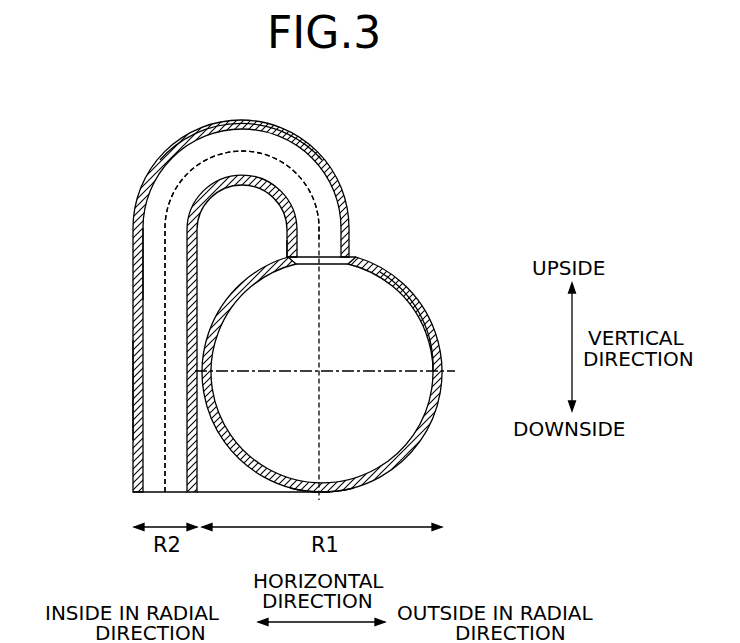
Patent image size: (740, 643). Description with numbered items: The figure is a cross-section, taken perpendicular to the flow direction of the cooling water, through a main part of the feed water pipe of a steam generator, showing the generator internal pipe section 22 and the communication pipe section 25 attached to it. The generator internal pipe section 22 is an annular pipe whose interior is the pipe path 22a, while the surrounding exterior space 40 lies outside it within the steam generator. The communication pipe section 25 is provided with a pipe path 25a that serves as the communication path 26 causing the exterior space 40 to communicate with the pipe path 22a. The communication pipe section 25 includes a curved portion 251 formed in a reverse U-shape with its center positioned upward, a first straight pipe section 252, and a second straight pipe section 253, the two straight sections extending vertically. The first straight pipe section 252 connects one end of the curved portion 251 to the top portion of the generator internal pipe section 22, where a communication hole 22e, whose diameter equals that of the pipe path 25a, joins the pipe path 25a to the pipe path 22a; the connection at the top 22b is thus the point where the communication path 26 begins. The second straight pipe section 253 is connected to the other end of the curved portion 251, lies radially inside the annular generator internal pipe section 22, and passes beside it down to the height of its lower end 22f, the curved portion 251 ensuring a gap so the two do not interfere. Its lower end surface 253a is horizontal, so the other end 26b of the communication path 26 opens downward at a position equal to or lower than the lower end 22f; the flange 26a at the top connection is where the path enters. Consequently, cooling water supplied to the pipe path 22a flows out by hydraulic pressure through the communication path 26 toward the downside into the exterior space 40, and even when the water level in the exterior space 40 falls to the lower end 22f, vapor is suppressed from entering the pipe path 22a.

The exterior space 40 is at (27, 339).
The communication pipe section 25 is at (129, 211).
The pipe path 25a is at (140, 243).
The curved portion 251 is at (271, 123).
The first straight pipe section 252 is at (350, 225).
The second straight pipe section 253 is at (133, 373).
The lower end surface 253a is at (137, 493).
The communication path 26 is at (150, 283).
The groove bottom (flange) 26a is at (362, 258).
The other end of the communication path 26b is at (166, 493).
The generator internal pipe section 22 is at (430, 283).
The pipe path 22a is at (409, 351).
The flat upper portion of ring member 22b is at (325, 282).
The communication hole 22e is at (297, 248).
The lower end 22f is at (324, 492).